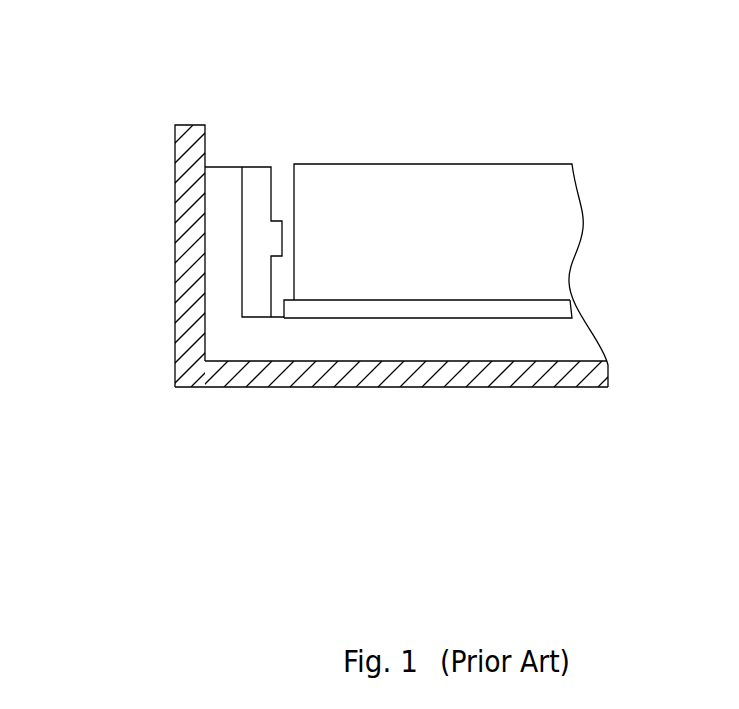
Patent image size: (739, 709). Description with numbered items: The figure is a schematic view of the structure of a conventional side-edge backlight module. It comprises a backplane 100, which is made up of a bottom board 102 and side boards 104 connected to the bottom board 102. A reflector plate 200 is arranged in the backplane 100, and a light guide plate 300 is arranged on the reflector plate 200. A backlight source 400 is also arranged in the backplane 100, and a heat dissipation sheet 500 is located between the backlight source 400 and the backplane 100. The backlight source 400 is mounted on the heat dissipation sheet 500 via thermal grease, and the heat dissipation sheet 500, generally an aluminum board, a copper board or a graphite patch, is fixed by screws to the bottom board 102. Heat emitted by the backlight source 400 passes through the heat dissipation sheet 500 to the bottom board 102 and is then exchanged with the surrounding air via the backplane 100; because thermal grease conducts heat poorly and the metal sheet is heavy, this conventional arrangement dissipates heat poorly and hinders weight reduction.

The backplane 100 is at (350, 314).
The bottom board 102 is at (325, 370).
The side boards 104 is at (185, 283).
The reflector plate 200 is at (542, 313).
The light guide plate 300 is at (537, 232).
The backlight source 400 is at (257, 193).
The heat dissipation sheet 500 is at (220, 250).